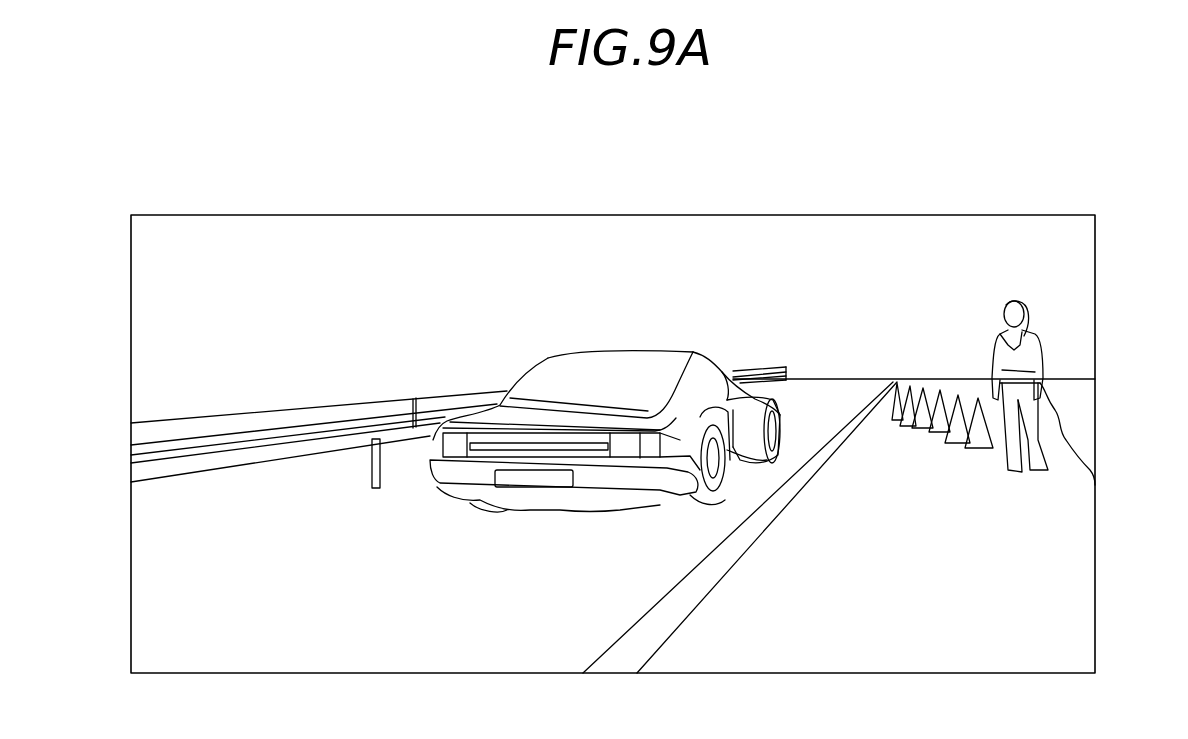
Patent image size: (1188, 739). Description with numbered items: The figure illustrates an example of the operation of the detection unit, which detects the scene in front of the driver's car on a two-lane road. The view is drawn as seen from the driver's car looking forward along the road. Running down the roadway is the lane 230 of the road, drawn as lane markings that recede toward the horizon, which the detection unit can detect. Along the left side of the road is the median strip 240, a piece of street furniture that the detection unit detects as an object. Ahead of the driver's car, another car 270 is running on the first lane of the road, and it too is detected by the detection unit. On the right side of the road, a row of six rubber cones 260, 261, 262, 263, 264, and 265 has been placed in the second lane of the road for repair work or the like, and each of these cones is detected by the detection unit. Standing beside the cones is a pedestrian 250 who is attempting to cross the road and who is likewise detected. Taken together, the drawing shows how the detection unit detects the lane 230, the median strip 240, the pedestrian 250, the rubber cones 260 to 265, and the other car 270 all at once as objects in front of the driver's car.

The lane 230 is at (643, 647).
The median strip 240 is at (175, 432).
The pedestrian 250 is at (1023, 369).
The rubber cone 260 is at (889, 380).
The rubber cone 261 is at (913, 380).
The rubber cone 262 is at (927, 378).
The rubber cone 263 is at (940, 392).
The rubber cone 264 is at (960, 417).
The rubber cone 265 is at (980, 434).
The other car 270 is at (645, 345).